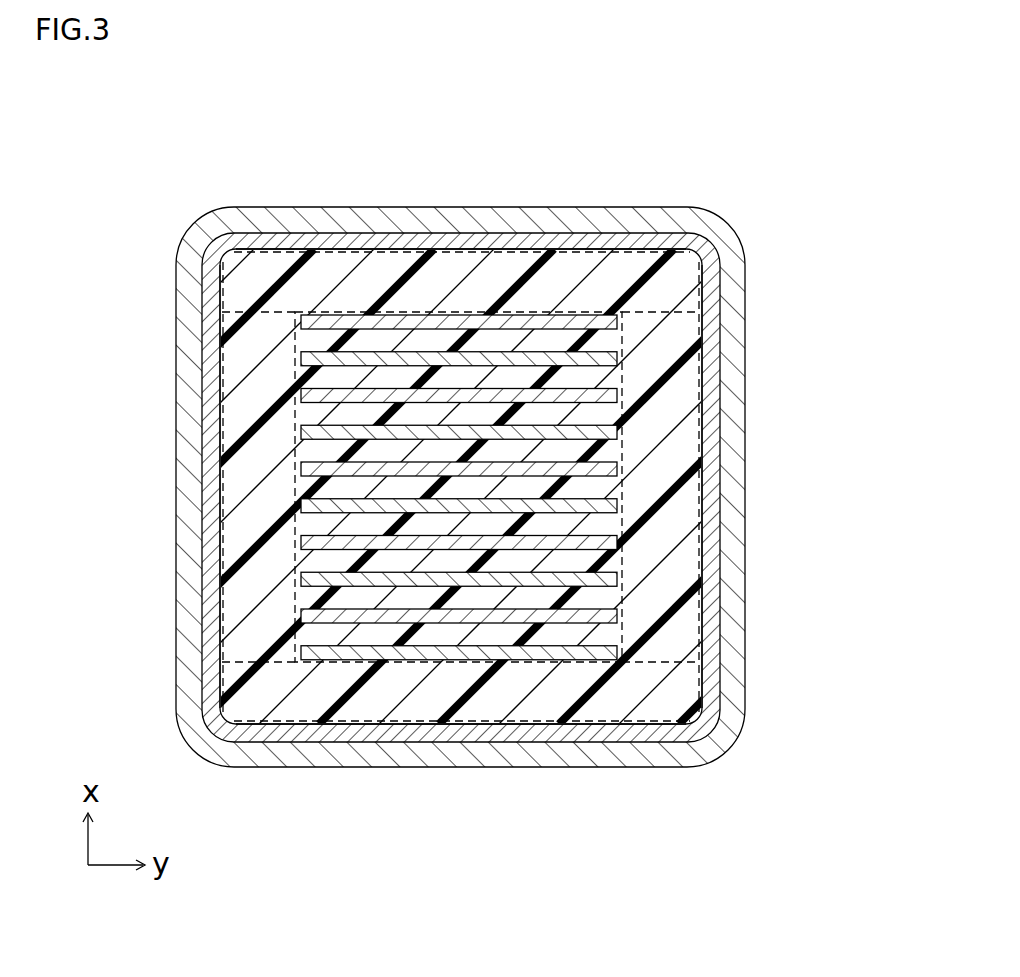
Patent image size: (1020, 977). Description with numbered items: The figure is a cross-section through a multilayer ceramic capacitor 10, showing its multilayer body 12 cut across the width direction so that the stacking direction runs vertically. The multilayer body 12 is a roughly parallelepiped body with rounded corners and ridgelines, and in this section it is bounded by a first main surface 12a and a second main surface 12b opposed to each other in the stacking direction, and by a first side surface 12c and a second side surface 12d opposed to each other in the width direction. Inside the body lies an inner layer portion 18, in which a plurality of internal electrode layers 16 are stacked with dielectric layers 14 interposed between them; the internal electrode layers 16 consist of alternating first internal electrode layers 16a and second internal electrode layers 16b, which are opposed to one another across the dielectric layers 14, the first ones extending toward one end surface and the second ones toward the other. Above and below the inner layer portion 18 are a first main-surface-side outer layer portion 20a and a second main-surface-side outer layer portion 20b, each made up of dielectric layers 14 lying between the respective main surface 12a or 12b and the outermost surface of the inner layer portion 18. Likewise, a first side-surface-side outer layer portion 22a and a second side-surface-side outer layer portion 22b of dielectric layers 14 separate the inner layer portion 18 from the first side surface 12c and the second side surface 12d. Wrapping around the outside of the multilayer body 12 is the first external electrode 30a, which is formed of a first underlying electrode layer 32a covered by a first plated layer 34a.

The multilayer ceramic capacitor 10 is at (198, 120).
The multilayer body 12 is at (548, 252).
The first main surface 12a is at (309, 252).
The second main surface 12b is at (397, 724).
The first side surface 12c is at (222, 518).
The second side surface 12d is at (700, 527).
The dielectric layer 14 is at (493, 415).
The internal electrode layer 16 is at (461, 640).
The first internal electrode layer 16a is at (304, 470).
The second internal electrode layer 16b is at (614, 358).
The inner layer portion 18 is at (612, 558).
The first main-surface-side outer layer portion 20a is at (612, 268).
The second main-surface-side outer layer portion 20b is at (292, 707).
The first side-surface-side outer layer portion 22a is at (247, 467).
The second side-surface-side outer layer portion 22b is at (678, 457).
The first external electrode 30a is at (544, 487).
The first underlying electrode layer 32a is at (710, 283).
The first plated layer 34a is at (732, 320).